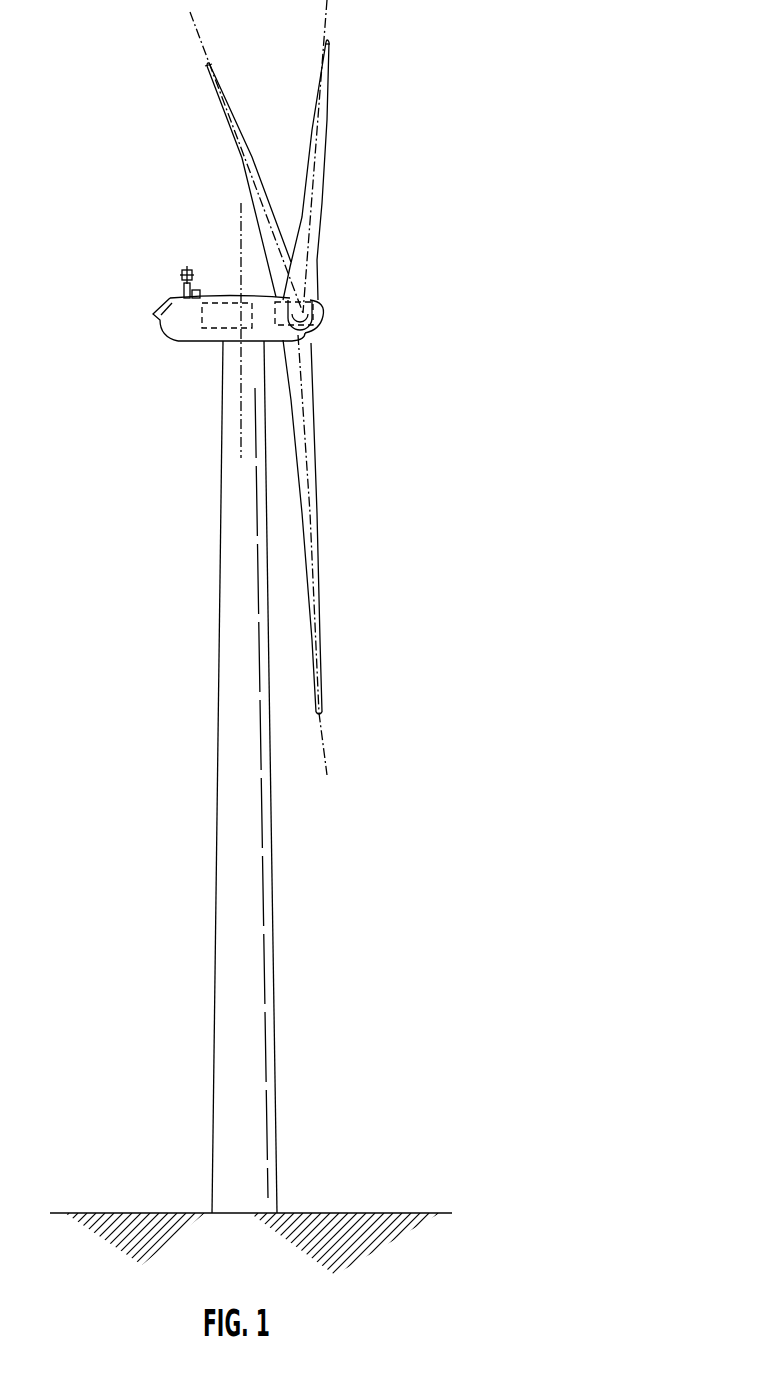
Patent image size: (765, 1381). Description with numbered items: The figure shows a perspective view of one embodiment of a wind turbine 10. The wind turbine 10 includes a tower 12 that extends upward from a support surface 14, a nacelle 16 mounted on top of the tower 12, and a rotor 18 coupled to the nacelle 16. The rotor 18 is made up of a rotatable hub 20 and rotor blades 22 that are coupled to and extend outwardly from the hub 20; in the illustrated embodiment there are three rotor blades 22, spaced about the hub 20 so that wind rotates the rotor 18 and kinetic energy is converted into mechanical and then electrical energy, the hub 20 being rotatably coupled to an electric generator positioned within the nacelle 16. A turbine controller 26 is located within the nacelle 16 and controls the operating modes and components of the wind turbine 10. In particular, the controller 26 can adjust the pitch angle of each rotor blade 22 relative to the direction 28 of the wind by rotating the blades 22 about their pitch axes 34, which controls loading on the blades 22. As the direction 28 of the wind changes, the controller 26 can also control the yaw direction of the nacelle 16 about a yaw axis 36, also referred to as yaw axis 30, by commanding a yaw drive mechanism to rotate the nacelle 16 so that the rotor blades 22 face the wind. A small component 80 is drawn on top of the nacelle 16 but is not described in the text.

The wind turbine 10 is at (431, 120).
The tower 12 is at (233, 897).
The support surface 14 is at (130, 1213).
The nacelle 16 is at (200, 343).
The rotor 18 is at (332, 285).
The rotatable hub 20 is at (322, 322).
The rotor blade 22 is at (308, 163).
The turbine controller 26 is at (221, 292).
The direction of the wind 28 is at (432, 300).
The yaw axis 30 is at (320, 316).
The pitch axis 34 is at (198, 43).
The yaw axis 36 is at (242, 402).
The sensor 80 is at (179, 273).